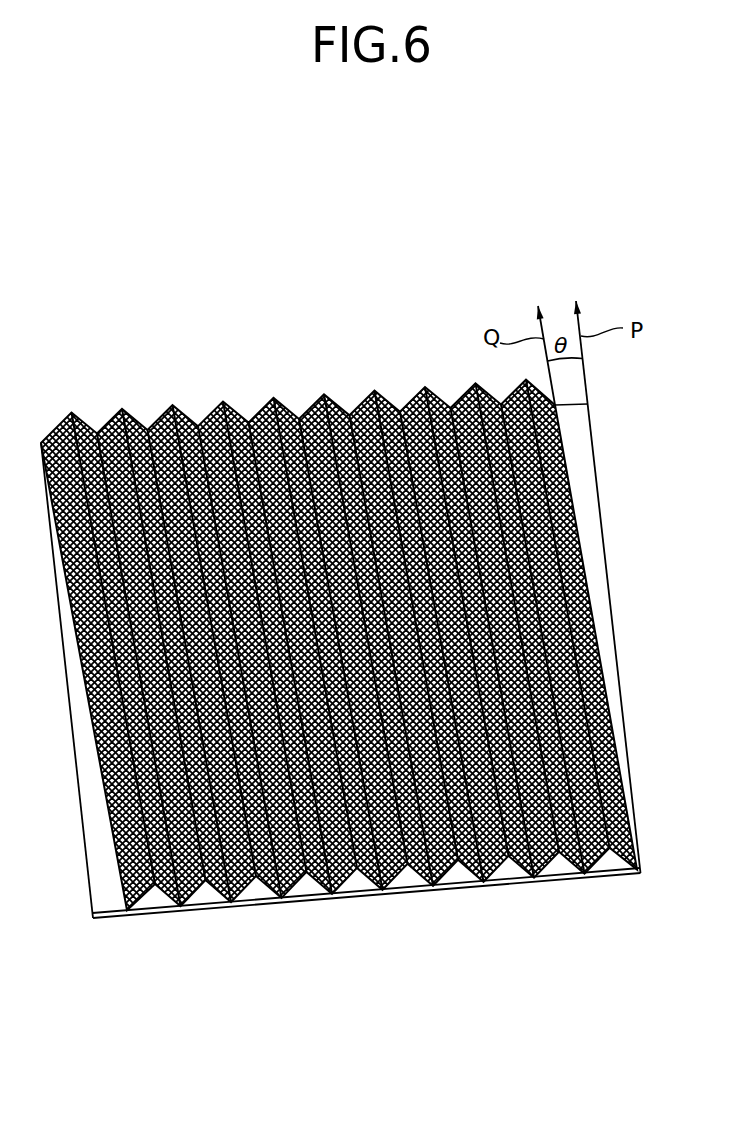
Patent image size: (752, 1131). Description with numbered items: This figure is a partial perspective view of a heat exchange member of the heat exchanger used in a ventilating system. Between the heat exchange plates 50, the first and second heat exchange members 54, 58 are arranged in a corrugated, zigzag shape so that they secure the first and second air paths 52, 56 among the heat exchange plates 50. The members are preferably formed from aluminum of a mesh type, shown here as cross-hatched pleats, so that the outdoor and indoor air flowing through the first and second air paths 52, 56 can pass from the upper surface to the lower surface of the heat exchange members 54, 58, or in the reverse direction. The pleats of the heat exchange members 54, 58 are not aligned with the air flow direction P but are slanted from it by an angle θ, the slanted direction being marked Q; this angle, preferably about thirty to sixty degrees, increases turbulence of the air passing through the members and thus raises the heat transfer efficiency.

The heat exchange plate 50 is at (625, 878).
The first air path 52 is at (339, 680).
The first heat exchange member 54 is at (341, 674).
The second air path 56 is at (457, 875).
The second heat exchange member 58 is at (545, 868).